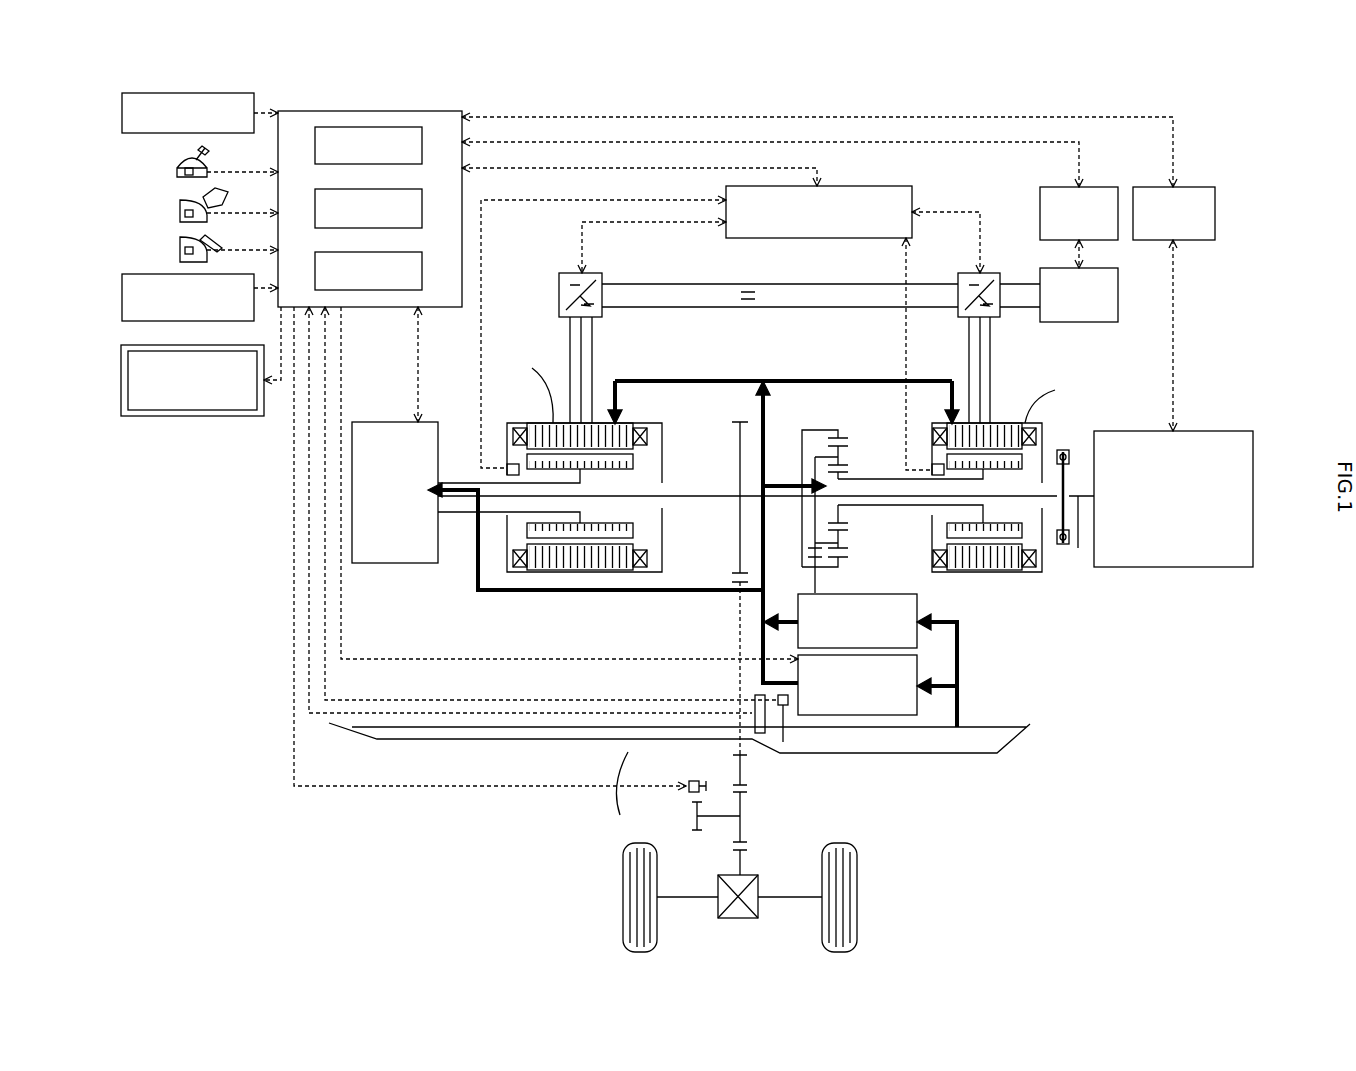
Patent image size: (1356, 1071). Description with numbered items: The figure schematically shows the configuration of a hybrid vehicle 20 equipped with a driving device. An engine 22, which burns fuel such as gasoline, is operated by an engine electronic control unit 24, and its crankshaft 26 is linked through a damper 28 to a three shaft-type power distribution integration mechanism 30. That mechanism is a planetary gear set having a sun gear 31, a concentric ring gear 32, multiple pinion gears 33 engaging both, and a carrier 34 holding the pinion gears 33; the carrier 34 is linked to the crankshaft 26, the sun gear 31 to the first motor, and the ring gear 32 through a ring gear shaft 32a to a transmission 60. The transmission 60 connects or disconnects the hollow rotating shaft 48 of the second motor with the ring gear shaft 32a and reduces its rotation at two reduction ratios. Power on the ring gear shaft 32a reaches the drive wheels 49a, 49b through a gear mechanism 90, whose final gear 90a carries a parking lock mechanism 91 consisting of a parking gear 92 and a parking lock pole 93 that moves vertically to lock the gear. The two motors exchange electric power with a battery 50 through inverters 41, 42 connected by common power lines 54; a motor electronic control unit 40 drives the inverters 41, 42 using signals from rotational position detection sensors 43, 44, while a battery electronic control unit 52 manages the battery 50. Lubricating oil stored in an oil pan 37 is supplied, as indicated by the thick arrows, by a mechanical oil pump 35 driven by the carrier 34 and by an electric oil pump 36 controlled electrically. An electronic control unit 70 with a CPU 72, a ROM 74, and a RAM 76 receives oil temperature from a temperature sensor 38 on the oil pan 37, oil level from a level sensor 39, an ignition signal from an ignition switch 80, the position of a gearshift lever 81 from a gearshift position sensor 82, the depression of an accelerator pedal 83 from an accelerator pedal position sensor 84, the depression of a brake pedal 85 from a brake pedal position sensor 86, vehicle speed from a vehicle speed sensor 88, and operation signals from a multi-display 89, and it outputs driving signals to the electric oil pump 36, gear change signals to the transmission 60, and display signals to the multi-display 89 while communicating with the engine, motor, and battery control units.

The hybrid vehicle 20 is at (892, 102).
The engine 22 is at (1195, 431).
The engine electronic control unit 24 is at (1155, 187).
The crankshaft 26 is at (1078, 548).
The damper 28 is at (1063, 545).
The power distribution integration mechanism 30 is at (693, 512).
The sun gear 31 is at (840, 532).
The ring gear 32 is at (840, 558).
The ring gear shaft 32a is at (724, 496).
The pinion gears 33 is at (840, 478).
The carrier 34 is at (822, 457).
The mechanical oil pump 35 is at (920, 603).
The electric oil pump 36 is at (920, 665).
The oil pan 37 is at (1012, 738).
The temperature sensor 38 is at (790, 710).
The level sensor 39 is at (755, 698).
The motor electronic control unit 40 is at (848, 186).
The inverter 41 is at (968, 273).
The inverter 42 is at (596, 273).
The rotational position detection sensor 43 is at (932, 466).
The rotational position detection sensor 44 is at (507, 468).
The hollow rotating shaft 48 is at (455, 483).
The drive wheel 49a is at (623, 907).
The drive wheel 49b is at (857, 907).
The battery 50 is at (1094, 268).
The battery electronic control unit 52 is at (1053, 187).
The power lines 54 is at (810, 307).
The transmission 60 is at (395, 422).
The electronic control unit 70 is at (370, 191).
The CPU 72 is at (368, 145).
The ROM 74 is at (368, 208).
The RAM 76 is at (368, 271).
The ignition switch 80 is at (122, 108).
The gearshift lever 81 is at (200, 152).
The gearshift position sensor 82 is at (185, 172).
The accelerator pedal 83 is at (205, 198).
The accelerator pedal position sensor 84 is at (185, 214).
The brake pedal 85 is at (205, 236).
The brake pedal position sensor 86 is at (185, 252).
The vehicle speed sensor 88 is at (122, 300).
The multi-display 89 is at (140, 345).
The gear mechanism 90 is at (789, 670).
The final gear 90a is at (740, 826).
The parking lock mechanism 91 is at (500, 568).
The parking gear 92 is at (692, 804).
The parking lock pole 93 is at (689, 782).